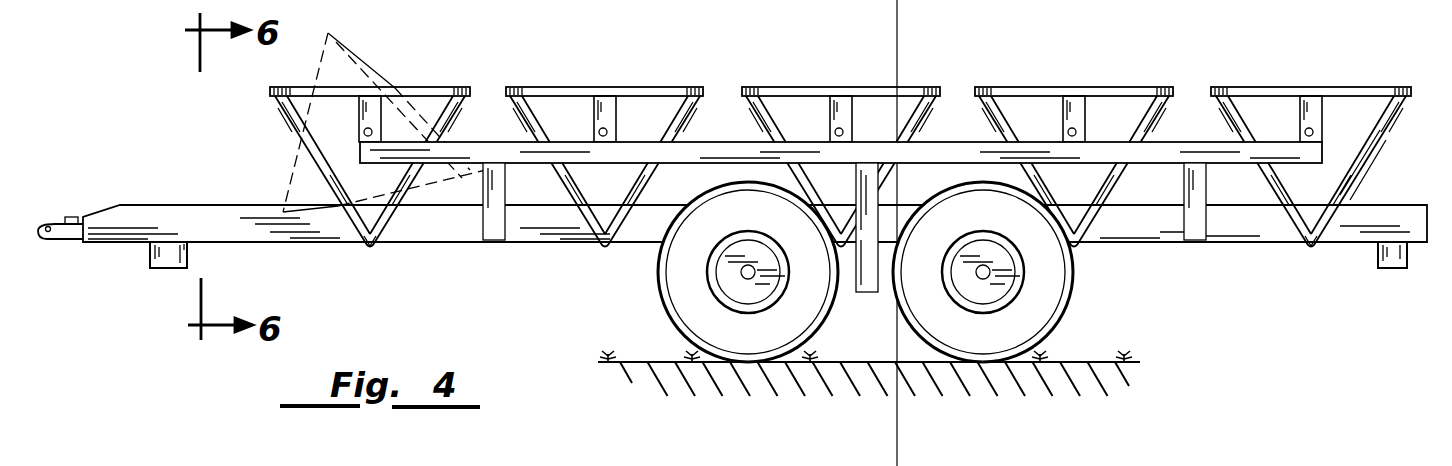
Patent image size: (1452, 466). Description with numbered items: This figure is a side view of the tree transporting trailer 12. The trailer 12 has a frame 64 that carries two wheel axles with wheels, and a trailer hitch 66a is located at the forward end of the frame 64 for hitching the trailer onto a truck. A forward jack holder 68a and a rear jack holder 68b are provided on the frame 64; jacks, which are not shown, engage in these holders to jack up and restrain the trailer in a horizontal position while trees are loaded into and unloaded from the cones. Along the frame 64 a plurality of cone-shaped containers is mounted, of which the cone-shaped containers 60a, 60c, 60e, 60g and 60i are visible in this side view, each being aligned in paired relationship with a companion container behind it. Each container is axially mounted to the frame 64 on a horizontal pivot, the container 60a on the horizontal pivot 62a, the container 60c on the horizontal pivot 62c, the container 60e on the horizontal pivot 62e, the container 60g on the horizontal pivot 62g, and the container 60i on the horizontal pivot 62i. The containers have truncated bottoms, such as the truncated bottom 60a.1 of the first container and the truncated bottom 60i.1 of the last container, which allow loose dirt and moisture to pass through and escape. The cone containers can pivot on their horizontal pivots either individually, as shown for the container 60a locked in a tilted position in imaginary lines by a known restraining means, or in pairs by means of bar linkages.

The trailer 12 is at (156, 82).
The frame 64 is at (262, 243).
The trailer hitch 66a is at (42, 222).
The forward jack holder 68a is at (166, 268).
The rear jack holder 68b is at (1390, 268).
The cone-shaped container 60a is at (436, 87).
The truncated bottom 60a.1 is at (372, 247).
The horizontal pivot 62a is at (369, 128).
The cone-shaped container 60c is at (664, 87).
The horizontal pivot 62c is at (644, 71).
The cone-shaped container 60e is at (903, 87).
The horizontal pivot 62e is at (898, 71).
The cone-shaped container 60g is at (1128, 87).
The horizontal pivot 62g is at (1112, 71).
The cone-shaped container 60i is at (1355, 87).
The truncated bottom 60i.1 is at (1311, 248).
The horizontal pivot 62i is at (1306, 128).